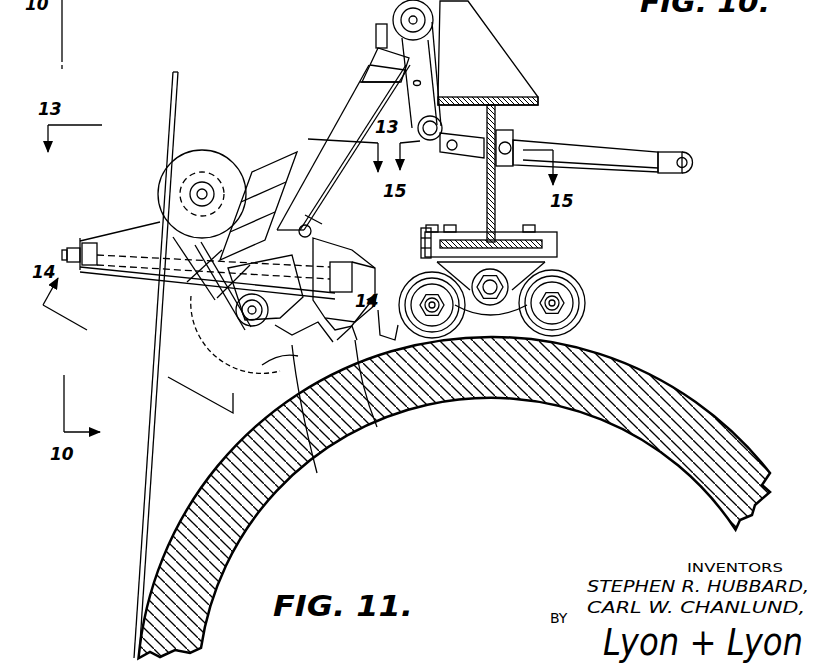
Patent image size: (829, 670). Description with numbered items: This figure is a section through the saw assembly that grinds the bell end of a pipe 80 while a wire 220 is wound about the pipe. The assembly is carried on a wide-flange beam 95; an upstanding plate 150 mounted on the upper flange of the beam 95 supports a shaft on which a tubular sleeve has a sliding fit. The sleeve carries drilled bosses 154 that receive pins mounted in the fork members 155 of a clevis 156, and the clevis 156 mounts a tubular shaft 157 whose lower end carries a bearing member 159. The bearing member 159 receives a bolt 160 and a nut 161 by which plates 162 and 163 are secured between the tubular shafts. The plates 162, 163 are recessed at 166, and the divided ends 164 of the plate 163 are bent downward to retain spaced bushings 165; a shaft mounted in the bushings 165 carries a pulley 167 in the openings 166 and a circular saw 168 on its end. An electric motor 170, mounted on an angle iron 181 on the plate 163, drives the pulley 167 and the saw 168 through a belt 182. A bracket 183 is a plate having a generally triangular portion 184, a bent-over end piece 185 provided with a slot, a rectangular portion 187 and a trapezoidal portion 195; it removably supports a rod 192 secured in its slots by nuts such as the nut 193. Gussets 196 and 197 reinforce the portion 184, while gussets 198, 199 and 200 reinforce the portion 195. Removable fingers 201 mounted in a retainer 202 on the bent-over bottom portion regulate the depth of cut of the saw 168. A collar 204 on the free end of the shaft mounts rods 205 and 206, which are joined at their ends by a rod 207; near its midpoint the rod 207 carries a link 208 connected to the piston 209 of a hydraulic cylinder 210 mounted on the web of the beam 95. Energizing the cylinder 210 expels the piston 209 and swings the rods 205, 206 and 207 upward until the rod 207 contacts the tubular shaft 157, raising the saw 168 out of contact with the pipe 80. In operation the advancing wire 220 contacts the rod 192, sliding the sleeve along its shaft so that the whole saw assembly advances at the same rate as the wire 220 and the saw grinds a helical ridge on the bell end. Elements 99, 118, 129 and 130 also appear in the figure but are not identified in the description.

The pipe 80 is at (703, 407).
The wire 220 is at (179, 87).
The electric motor 170 is at (206, 152).
The stiffening member or gusset 196 is at (114, 230).
The generally triangular shaped portion 184 is at (133, 238).
The rod 192 is at (143, 268).
The bracket 183 is at (117, 280).
The nut 193 is at (67, 247).
The bent-over end piece 185 is at (69, 247).
The gusset 197 is at (187, 282).
The belt 182 is at (217, 298).
The divided ends 164 is at (224, 294).
The pulley 167 is at (212, 300).
The bushing 165 is at (252, 322).
The recess 166 is at (240, 335).
The circular saw 168 is at (200, 399).
The rectangular portion 187 is at (263, 365).
The plate 162 is at (274, 306).
The trapezoidal portion 195 is at (327, 338).
The angle iron 181 is at (283, 193).
The nut 161 is at (258, 172).
The tubular shaft 157 is at (362, 97).
The plate 163 is at (315, 206).
The bearing member 159 is at (311, 231).
The clevis 156 is at (377, 57).
The drilled boss 154 is at (393, 30).
The fork member 155 is at (376, 40).
The collar 204 is at (420, 18).
The rod 205 is at (420, 50).
The rod 206 is at (430, 92).
The rod 207 is at (443, 127).
The link 208 is at (443, 141).
The piston 209 is at (462, 152).
The upstanding plate 150 is at (486, 34).
The vertical web 99 is at (496, 114).
The hydraulic cylinder 210 is at (638, 155).
The wide-flange beam 95 is at (498, 220).
The carriage truck 118 is at (582, 280).
The wheel 130 is at (587, 305).
The wheel 129 is at (466, 316).
The bolt 160 is at (325, 247).
The gusset 200 is at (348, 254).
The gusset 199 is at (421, 256).
The retainer 202 is at (358, 334).
The gusset 198 is at (313, 466).
The removable fingers 201 is at (373, 424).